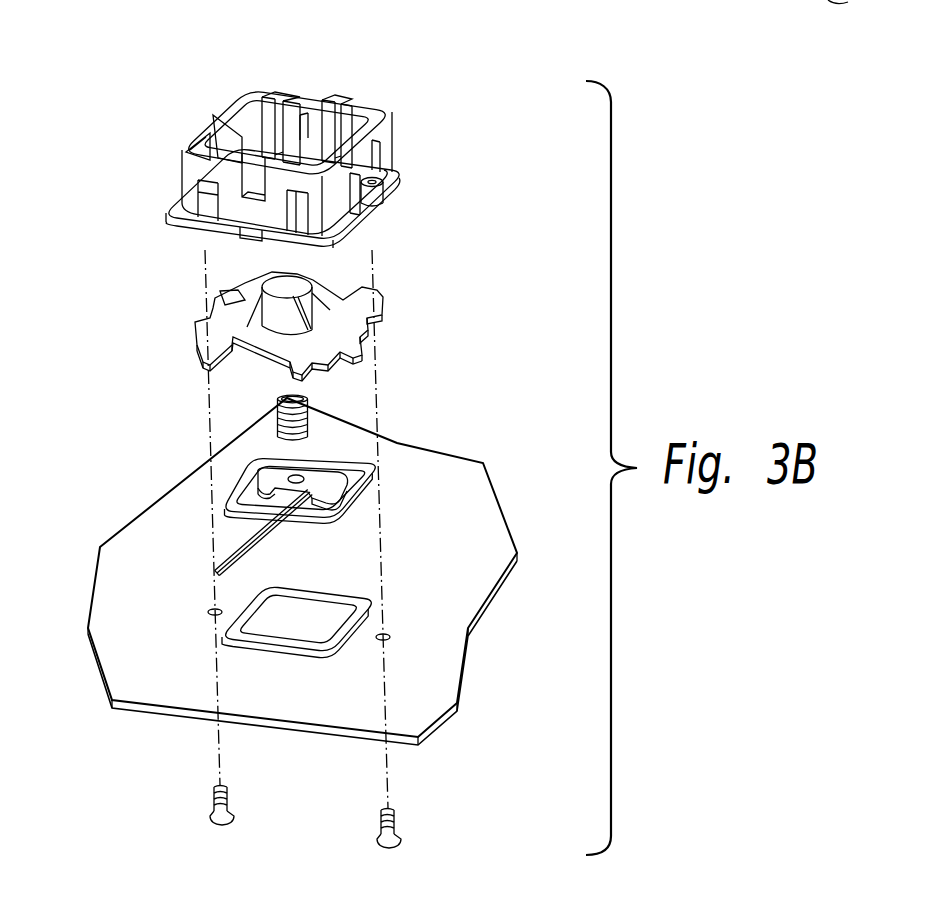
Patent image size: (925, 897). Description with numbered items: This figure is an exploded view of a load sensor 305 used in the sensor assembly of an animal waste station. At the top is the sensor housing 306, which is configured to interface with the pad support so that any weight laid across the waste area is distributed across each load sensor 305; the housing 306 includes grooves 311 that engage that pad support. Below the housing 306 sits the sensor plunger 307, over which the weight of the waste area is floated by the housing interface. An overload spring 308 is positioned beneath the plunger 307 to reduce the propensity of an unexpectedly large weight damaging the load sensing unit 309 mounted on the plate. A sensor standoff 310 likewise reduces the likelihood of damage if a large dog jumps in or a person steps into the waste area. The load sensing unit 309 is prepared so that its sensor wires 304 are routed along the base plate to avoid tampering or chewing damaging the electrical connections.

The sensor wires 304 is at (237, 543).
The load sensor 305 is at (80, 115).
The sensor housing 306 is at (412, 164).
The sensor plunger 307 is at (378, 313).
The overload spring 308 is at (308, 420).
The load sensing unit 309 is at (362, 488).
The sensor standoff 310 is at (340, 640).
The grooves 311 is at (307, 112).